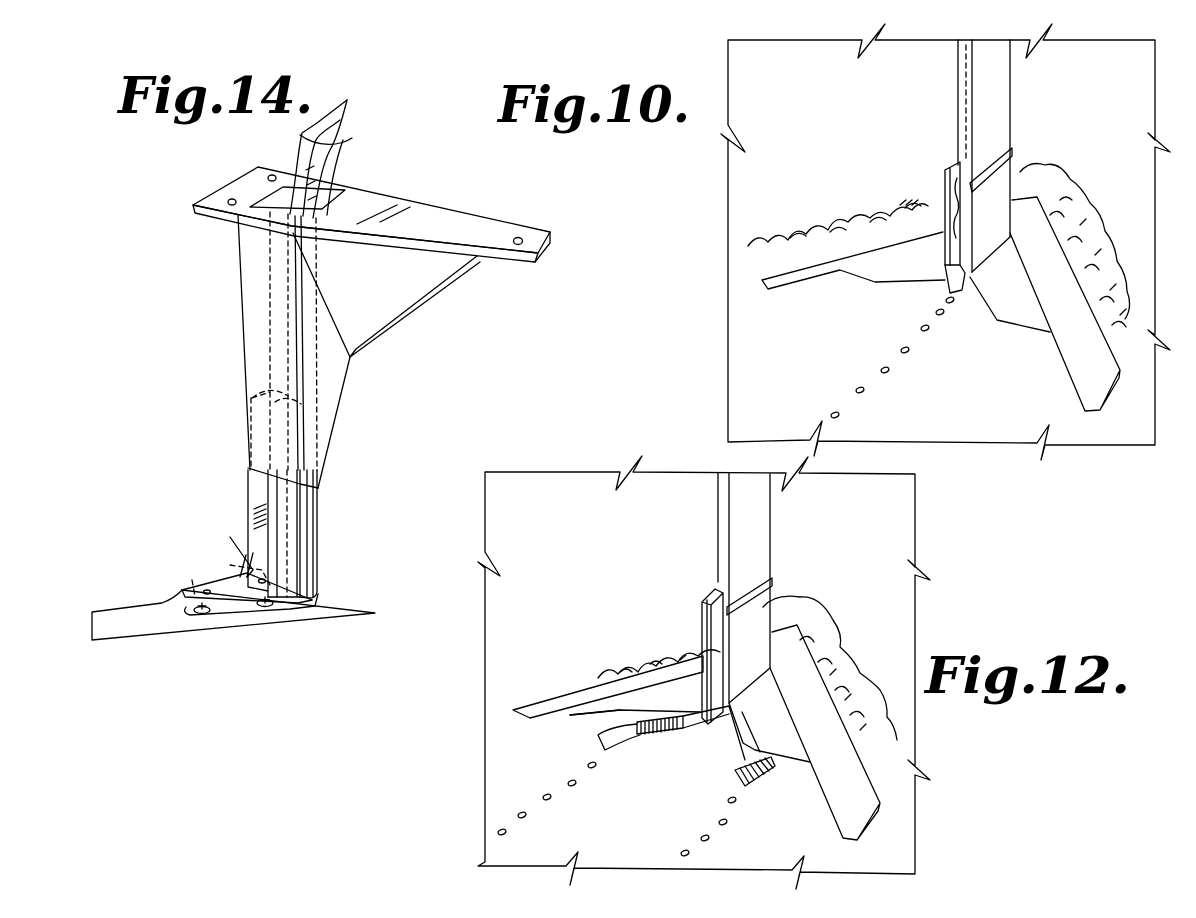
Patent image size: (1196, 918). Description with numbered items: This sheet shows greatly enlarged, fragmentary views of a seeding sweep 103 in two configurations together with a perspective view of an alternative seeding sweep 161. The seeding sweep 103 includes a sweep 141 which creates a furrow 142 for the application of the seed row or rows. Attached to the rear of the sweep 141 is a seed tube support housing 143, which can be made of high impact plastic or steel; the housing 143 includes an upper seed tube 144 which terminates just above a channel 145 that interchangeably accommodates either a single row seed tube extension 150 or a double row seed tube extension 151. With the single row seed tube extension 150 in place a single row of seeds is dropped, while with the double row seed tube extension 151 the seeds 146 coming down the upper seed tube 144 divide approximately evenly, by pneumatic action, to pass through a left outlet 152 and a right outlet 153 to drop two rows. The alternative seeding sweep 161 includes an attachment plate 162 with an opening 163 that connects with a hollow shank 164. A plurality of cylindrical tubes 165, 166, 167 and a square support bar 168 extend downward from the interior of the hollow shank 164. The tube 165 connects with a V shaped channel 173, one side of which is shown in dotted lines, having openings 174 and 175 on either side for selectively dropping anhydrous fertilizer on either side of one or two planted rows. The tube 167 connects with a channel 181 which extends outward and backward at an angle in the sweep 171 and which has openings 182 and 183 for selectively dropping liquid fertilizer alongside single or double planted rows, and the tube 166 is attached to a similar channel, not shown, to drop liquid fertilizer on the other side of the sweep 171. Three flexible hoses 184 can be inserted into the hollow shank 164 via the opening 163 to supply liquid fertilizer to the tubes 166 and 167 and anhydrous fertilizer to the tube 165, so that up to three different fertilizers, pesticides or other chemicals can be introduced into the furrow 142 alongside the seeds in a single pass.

In FIG. 10, the seeding sweep 103 is at (984, 182).
In FIG. 12, the seeding sweep 103 is at (734, 639).
In FIG. 10, the sweep 141 is at (808, 279).
In FIG. 12, the sweep 141 is at (545, 703).
In FIG. 10, the furrow 142 is at (872, 240).
In FIG. 12, the furrow 142 is at (585, 663).
In FIG. 10, the seed tube support housing 143 is at (1002, 175).
In FIG. 12, the seed tube support housing 143 is at (762, 597).
In FIG. 10, the upper seed tube 144 is at (960, 105).
In FIG. 12, the upper seed tube 144 is at (720, 517).
In FIG. 10, the channel 145 is at (948, 185).
In FIG. 12, the seeds 146 is at (575, 782).
In FIG. 10, the single row seed tube extension 150 is at (947, 286).
In FIG. 12, the double row seed tube extension 151 is at (718, 585).
In FIG. 12, the left outlet 152 is at (607, 745).
In FIG. 12, the right outlet 153 is at (737, 783).
In FIG. 14, the alternative seeding sweep 161 is at (360, 312).
In FIG. 14, the attachment plate 162 is at (422, 212).
In FIG. 14, the opening 163 is at (333, 188).
In FIG. 14, the hollow shank 164 is at (248, 310).
In FIG. 14, the tube 165 is at (310, 523).
In FIG. 14, the tube 166 is at (300, 572).
In FIG. 14, the tube 167 is at (262, 532).
In FIG. 14, the square support bar 168 is at (248, 488).
In FIG. 14, the sweep 171 is at (157, 623).
In FIG. 14, the V shaped channel 173 is at (280, 600).
In FIG. 14, the opening 174 is at (256, 610).
In FIG. 14, the opening 175 is at (198, 613).
In FIG. 14, the channel 181 is at (183, 593).
In FIG. 14, the opening 182 is at (230, 572).
In FIG. 14, the opening 183 is at (190, 573).
In FIG. 14, the flexible hoses 184 is at (348, 103).